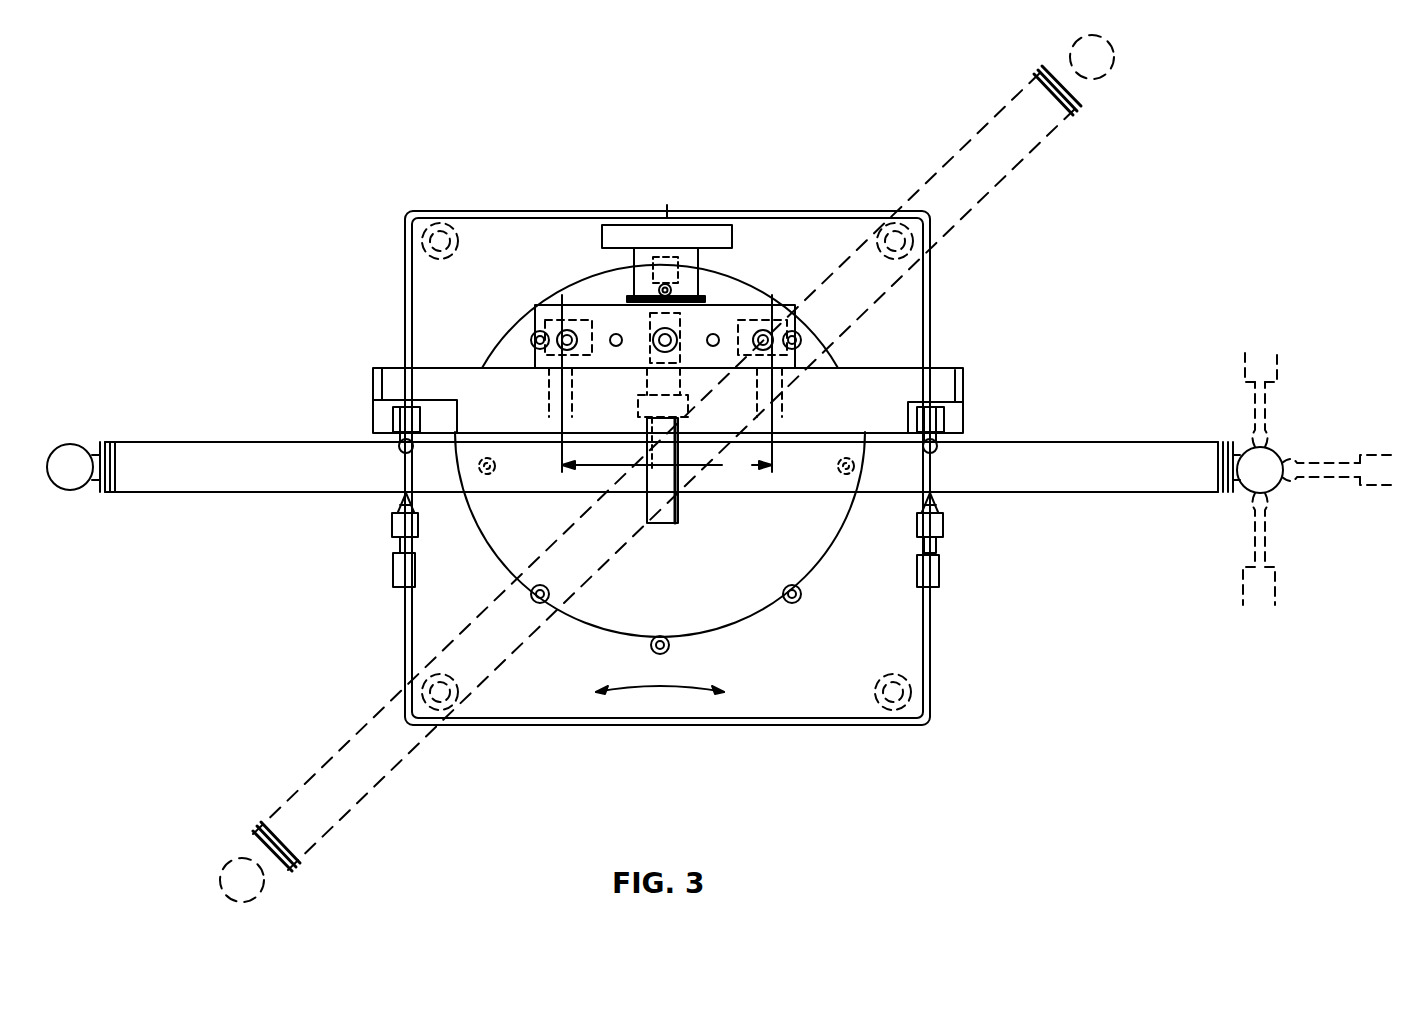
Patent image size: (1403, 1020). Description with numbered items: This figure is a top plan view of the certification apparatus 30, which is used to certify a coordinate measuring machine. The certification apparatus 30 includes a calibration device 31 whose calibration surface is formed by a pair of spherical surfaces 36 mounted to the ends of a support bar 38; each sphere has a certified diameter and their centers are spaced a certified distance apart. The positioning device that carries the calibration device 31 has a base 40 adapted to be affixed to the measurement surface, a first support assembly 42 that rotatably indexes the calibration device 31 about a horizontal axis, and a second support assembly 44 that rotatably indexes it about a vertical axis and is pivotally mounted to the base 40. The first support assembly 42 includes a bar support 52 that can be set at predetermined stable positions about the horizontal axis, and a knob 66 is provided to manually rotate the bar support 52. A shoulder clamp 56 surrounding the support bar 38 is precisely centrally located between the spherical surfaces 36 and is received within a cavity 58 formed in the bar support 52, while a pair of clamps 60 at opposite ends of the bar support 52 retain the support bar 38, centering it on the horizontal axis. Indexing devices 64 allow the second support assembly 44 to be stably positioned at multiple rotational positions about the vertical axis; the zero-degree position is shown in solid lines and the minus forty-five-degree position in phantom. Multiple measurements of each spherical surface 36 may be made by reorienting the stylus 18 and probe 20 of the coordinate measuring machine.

The stylus 18 is at (1268, 402).
The probe 20 is at (1280, 368).
The certification apparatus 30 is at (940, 645).
The calibration device 31 is at (1112, 442).
The spherical surfaces 36 is at (80, 447).
The support bar 38 is at (1000, 440).
The base 40 is at (938, 278).
The first support assembly 42 is at (590, 305).
The second support assembly 44 is at (505, 330).
The bar support 52 is at (893, 368).
The shoulder clamp 56 is at (672, 523).
The cavity 58 is at (642, 408).
The clamps 60 is at (392, 508).
The indexing devices 64 is at (483, 474).
The knob 66 is at (720, 233).